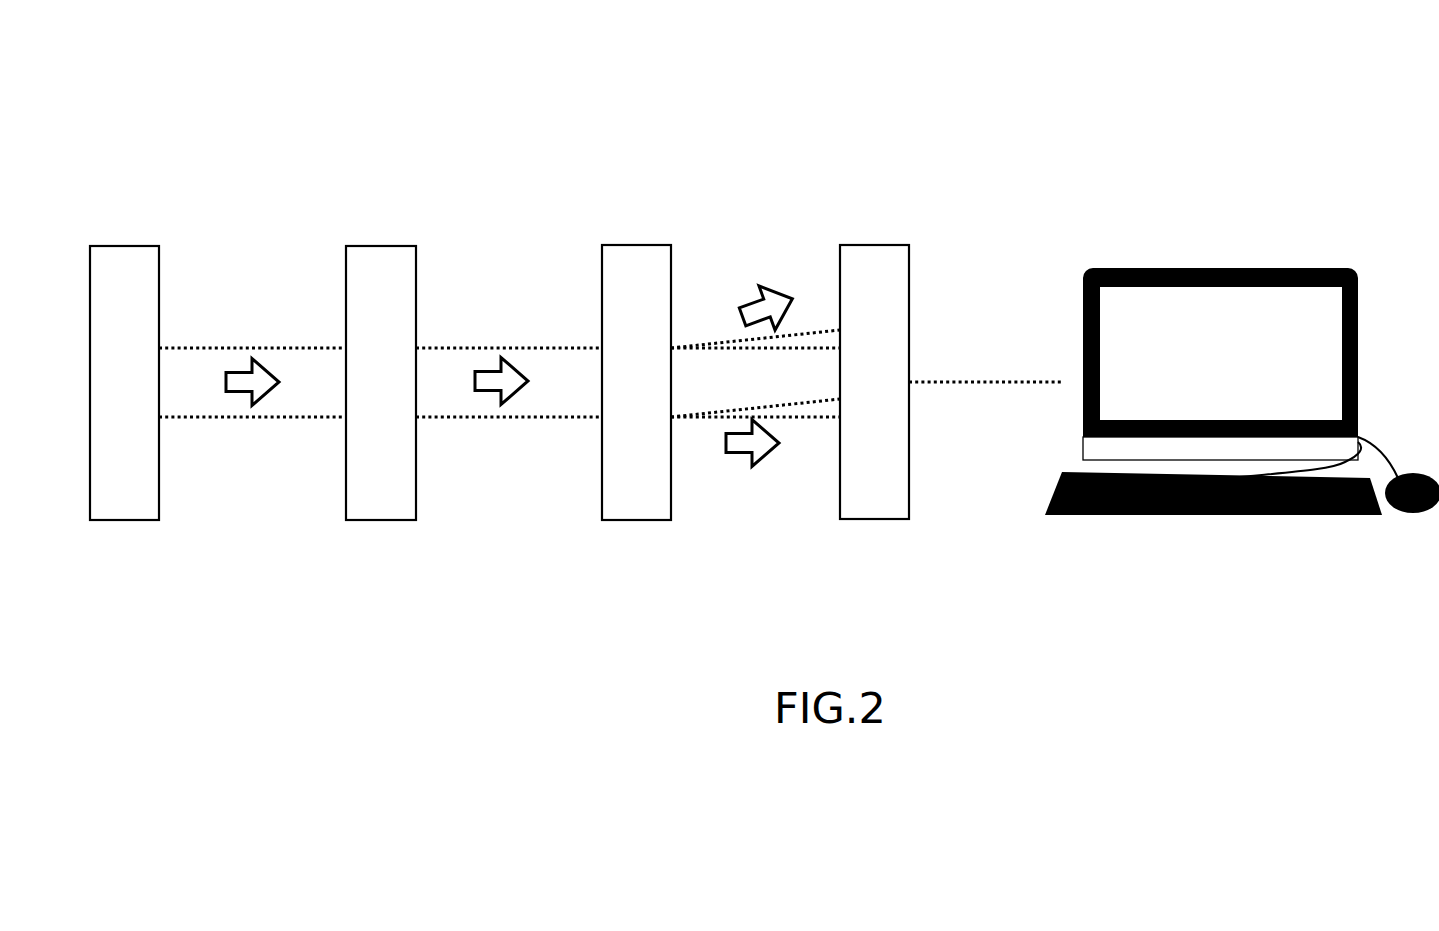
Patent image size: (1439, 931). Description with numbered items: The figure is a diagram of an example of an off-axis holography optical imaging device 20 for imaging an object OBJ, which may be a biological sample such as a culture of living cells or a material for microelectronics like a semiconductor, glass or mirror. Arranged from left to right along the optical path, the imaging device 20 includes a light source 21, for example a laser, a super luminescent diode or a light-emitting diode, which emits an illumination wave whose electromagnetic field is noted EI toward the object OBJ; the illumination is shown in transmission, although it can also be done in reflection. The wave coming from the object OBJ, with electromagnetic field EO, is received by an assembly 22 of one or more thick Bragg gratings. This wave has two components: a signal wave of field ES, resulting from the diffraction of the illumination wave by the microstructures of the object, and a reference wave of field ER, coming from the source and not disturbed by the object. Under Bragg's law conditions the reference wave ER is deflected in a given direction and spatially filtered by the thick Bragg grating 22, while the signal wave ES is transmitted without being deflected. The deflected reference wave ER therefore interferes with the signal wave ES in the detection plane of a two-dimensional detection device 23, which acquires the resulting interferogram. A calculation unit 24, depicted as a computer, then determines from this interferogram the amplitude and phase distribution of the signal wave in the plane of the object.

The imaging device 20 is at (1015, 130).
The light source 21 is at (112, 246).
The assembly of one or more thick Bragg gratings 22 is at (637, 245).
The two-dimensional detection device 23 is at (853, 245).
The calculation unit 24 is at (1300, 263).
The object OBJ is at (387, 520).
The electromagnetic field of the illumination wave EI is at (228, 417).
The electromagnetic field of the wave coming from the object EO is at (497, 417).
The electromagnetic field of the reference wave ER is at (727, 344).
The electromagnetic field of the signal wave ES is at (803, 422).